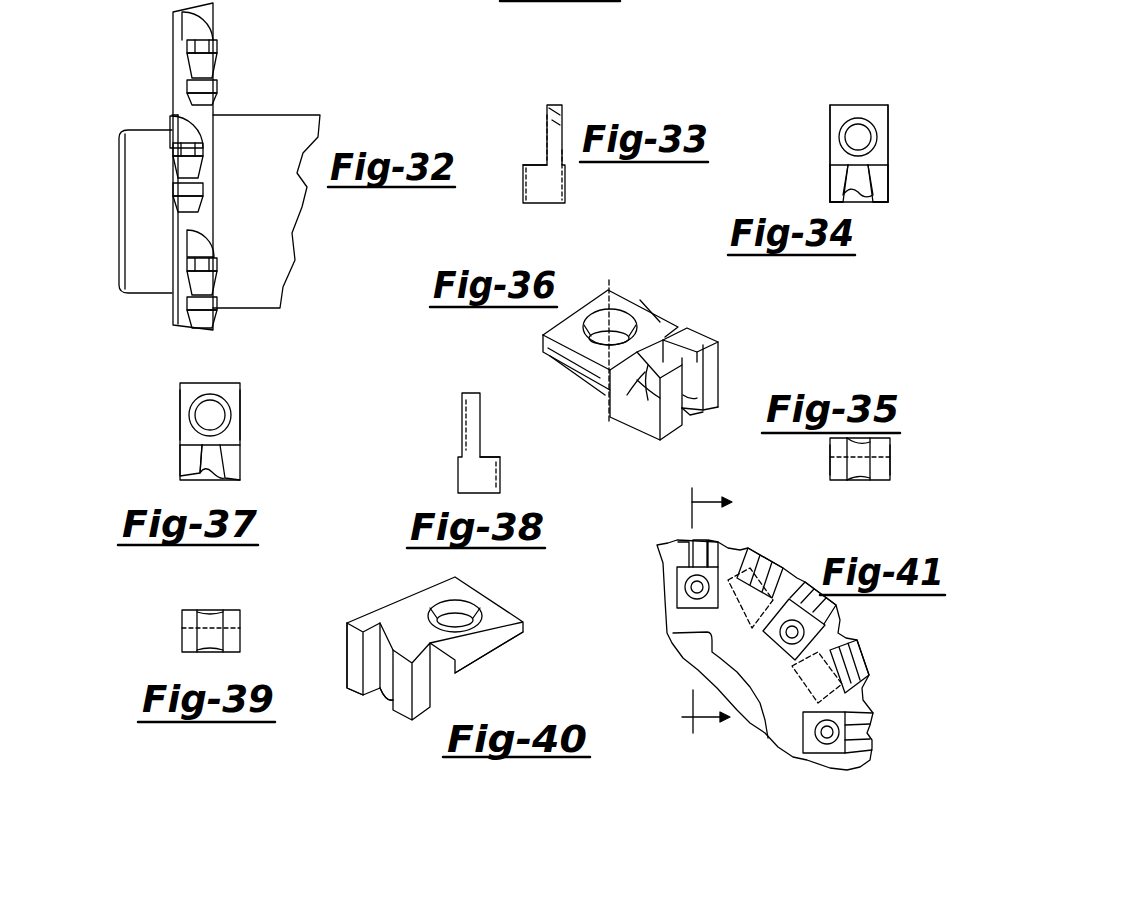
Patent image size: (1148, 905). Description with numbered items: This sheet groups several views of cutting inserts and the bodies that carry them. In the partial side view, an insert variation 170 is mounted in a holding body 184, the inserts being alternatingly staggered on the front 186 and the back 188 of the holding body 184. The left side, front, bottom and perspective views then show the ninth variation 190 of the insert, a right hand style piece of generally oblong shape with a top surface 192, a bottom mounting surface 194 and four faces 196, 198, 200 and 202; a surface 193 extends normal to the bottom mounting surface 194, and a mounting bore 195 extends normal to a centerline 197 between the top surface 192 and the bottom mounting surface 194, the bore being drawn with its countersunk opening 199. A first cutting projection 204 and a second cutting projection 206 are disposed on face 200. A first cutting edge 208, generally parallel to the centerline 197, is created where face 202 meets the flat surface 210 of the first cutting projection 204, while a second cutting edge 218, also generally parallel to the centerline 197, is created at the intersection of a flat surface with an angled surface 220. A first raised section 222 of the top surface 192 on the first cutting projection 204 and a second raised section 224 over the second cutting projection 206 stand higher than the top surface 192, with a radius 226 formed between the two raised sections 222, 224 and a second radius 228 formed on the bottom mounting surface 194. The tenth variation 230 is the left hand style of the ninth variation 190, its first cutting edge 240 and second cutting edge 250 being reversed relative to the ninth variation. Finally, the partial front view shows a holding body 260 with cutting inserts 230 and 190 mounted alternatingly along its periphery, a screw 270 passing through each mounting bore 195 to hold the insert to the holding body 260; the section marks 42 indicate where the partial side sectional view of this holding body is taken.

In FIG. 41, the section line 42- 42 is at (730, 622).
In FIG. 32, the insert variation 170 is at (218, 52).
In FIG. 32, the holding body 184 is at (177, 45).
In FIG. 32, the front of the holding body 186 is at (188, 84).
In FIG. 32, the back of the holding body 188 is at (210, 153).
In FIG. 33, the ninth variation of the insert 190 is at (574, 98).
In FIG. 34, the ninth variation of the insert 190 is at (812, 93).
In FIG. 36, the ninth variation of the insert 190 is at (585, 283).
In FIG. 38, the ninth variation of the insert 190 is at (470, 392).
In FIG. 41, the ninth variation of the insert 190 is at (747, 550).
In FIG. 33, the top surface 192 is at (564, 173).
In FIG. 34, the top surface 192 is at (838, 157).
In FIG. 36, the top surface 192 is at (648, 326).
In FIG. 38, the top surface 192 is at (459, 471).
In FIG. 40, the top surface 192 is at (500, 622).
In FIG. 33, the surface 193 is at (533, 153).
In FIG. 36, the surface 193 is at (587, 397).
In FIG. 38, the surface 193 is at (492, 455).
In FIG. 33, the bottom mounting surface 194 is at (538, 137).
In FIG. 38, the bottom mounting surface 194 is at (481, 403).
In FIG. 33, the mounting bore 195 is at (545, 128).
In FIG. 34, the mounting bore 195 is at (855, 128).
In FIG. 36, the mounting bore 195 is at (545, 323).
In FIG. 33, the face 196 is at (557, 104).
In FIG. 34, the face 196 is at (860, 105).
In FIG. 37, the face 196 is at (220, 383).
In FIG. 40, the face 196 is at (497, 598).
In FIG. 36, the centerline 197 is at (620, 279).
In FIG. 34, the face 198 is at (889, 117).
In FIG. 35, the face 198 is at (890, 478).
In FIG. 37, the face 198 is at (241, 408).
In FIG. 40, the face 198 is at (482, 650).
In FIG. 36, the bore 199 is at (634, 304).
In FIG. 33, the face 200 is at (547, 204).
In FIG. 34, the face 200 is at (829, 130).
In FIG. 35, the face 202 is at (829, 468).
In FIG. 36, the face 202 is at (563, 373).
In FIG. 37, the face 202 is at (180, 403).
In FIG. 34, the first cutting projection 204 is at (840, 177).
In FIG. 36, the first cutting projection 204 is at (674, 428).
In FIG. 34, the second cutting projection 206 is at (883, 173).
In FIG. 36, the second cutting projection 206 is at (711, 377).
In FIG. 36, the first cutting edge 208 is at (640, 427).
In FIG. 34, the flat surface 210 is at (840, 200).
In FIG. 36, the flat surface 210 is at (650, 443).
In FIG. 34, the second cutting edge 218 is at (866, 204).
In FIG. 36, the second cutting edge 218 is at (719, 353).
In FIG. 34, the angled surface 220 is at (874, 200).
In FIG. 36, the angled surface 220 is at (710, 408).
In FIG. 35, the first raised section 222 is at (830, 447).
In FIG. 36, the first raised section 222 is at (612, 413).
In FIG. 39, the first raised section 222 is at (190, 610).
In FIG. 35, the second raised section 224 is at (892, 440).
In FIG. 36, the second raised section 224 is at (708, 338).
In FIG. 39, the second raised section 224 is at (232, 610).
In FIG. 35, the radius 226 is at (875, 447).
In FIG. 36, the radius 226 is at (676, 333).
In FIG. 39, the radius 226 is at (212, 610).
In FIG. 35, the second radius 228 is at (857, 481).
In FIG. 36, the second radius 228 is at (690, 418).
In FIG. 39, the second radius 228 is at (215, 653).
In FIG. 37, the tenth variation of the insert 230 is at (168, 384).
In FIG. 40, the tenth variation of the insert 230 is at (392, 593).
In FIG. 41, the tenth variation of the insert 230 is at (677, 598).
In FIG. 37, the first cutting edge 240 is at (242, 468).
In FIG. 40, the first cutting edge 240 is at (402, 708).
In FIG. 37, the second cutting edge 250 is at (180, 483).
In FIG. 40, the second cutting edge 250 is at (352, 660).
In FIG. 41, the holding body 260 is at (750, 652).
In FIG. 41, the screw 270 is at (678, 578).